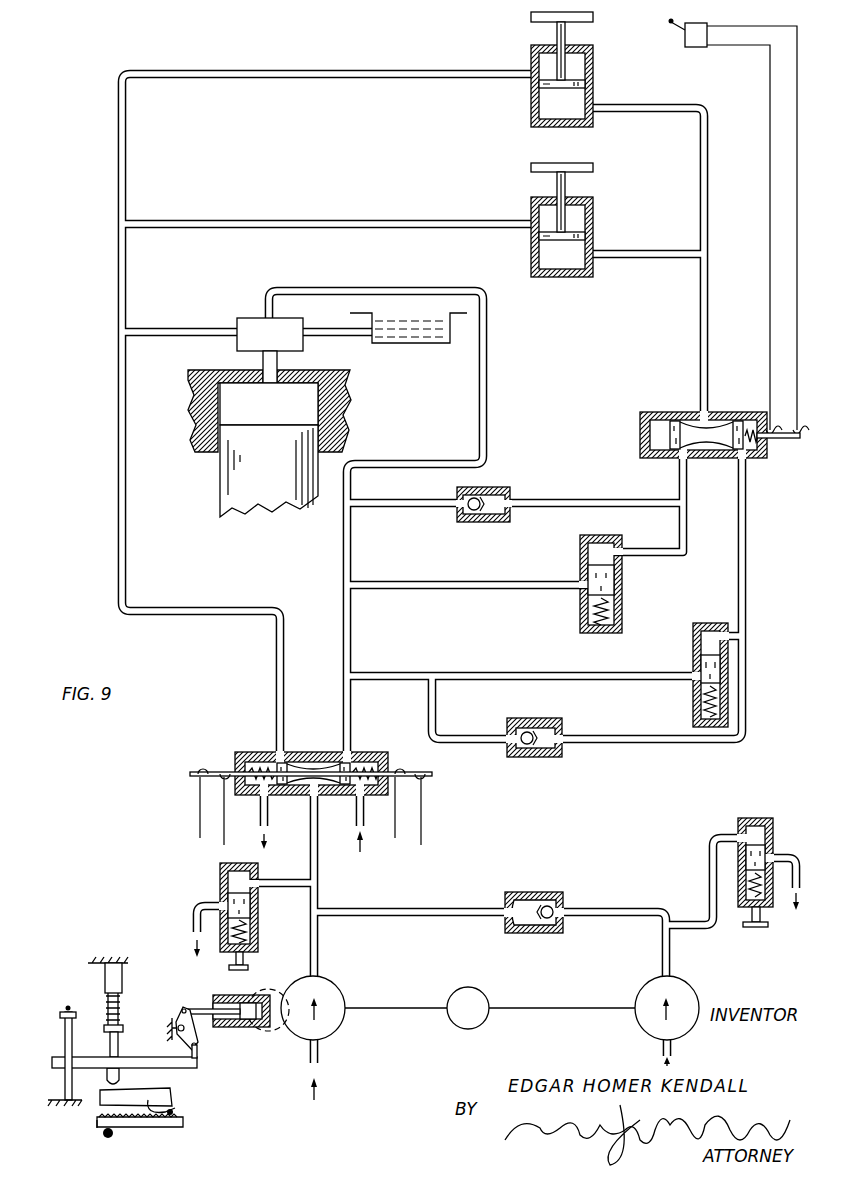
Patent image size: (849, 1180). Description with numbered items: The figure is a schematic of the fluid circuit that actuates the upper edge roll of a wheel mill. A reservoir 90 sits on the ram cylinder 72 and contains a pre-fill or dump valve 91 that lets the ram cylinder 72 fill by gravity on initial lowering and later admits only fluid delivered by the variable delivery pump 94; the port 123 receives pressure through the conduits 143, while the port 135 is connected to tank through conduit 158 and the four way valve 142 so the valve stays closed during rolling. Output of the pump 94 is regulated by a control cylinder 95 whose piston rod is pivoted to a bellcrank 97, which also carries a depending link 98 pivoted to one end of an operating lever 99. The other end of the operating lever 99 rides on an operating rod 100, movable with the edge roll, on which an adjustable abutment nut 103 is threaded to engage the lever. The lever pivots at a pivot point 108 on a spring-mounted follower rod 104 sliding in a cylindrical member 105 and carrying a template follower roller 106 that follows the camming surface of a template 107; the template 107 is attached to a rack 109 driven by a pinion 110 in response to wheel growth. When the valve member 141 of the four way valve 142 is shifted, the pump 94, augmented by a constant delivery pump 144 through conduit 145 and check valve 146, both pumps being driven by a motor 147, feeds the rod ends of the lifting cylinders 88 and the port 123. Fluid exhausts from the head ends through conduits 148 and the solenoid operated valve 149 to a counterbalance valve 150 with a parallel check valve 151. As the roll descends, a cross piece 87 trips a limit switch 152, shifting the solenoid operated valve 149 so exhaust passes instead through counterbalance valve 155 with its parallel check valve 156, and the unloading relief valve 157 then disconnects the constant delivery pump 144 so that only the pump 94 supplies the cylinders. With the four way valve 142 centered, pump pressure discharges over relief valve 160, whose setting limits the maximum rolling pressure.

The ram cylinder 72 is at (195, 406).
The cross piece 87 is at (532, 18).
The lifting cylinders 88 is at (594, 68).
The reservoir 90 is at (430, 344).
The pre-fill or dump valve 91 is at (237, 325).
The pump 94 is at (333, 1028).
The control cylinder 95 is at (255, 1028).
The bellcrank 97 is at (183, 1008).
The link 98 is at (198, 1046).
The operating lever 99 is at (185, 1069).
The operating rod 100 is at (65, 1042).
The abutment nut 103 is at (68, 1008).
The follower rod 104 is at (120, 1078).
The cylindrical member 105 is at (122, 985).
The template follower roller 106 is at (160, 1098).
The template 107 is at (148, 1102).
The pivot point 108 is at (118, 1058).
The rack 109 is at (98, 1120).
The pinion 110 is at (104, 1136).
The port 123 is at (237, 345).
The port 135 is at (265, 318).
The valve member 141 is at (320, 752).
The four way valve 142 is at (255, 752).
The conduits 143 is at (283, 72).
The constant delivery pump 144 is at (653, 986).
The conduit 145 is at (612, 910).
The check valve 146 is at (539, 892).
The motor 147 is at (450, 1022).
The conduits 148 is at (708, 340).
The solenoid operated valve 149 is at (729, 412).
The counterbalance valve 150 is at (622, 608).
The check valve 151 is at (505, 488).
The limit switch 152 is at (710, 47).
The counterbalance valve 155 is at (693, 630).
The check valve 156 is at (560, 758).
The unloading relief valve 157 is at (741, 818).
The conduit 158 is at (483, 386).
The relief valve 160 is at (220, 871).